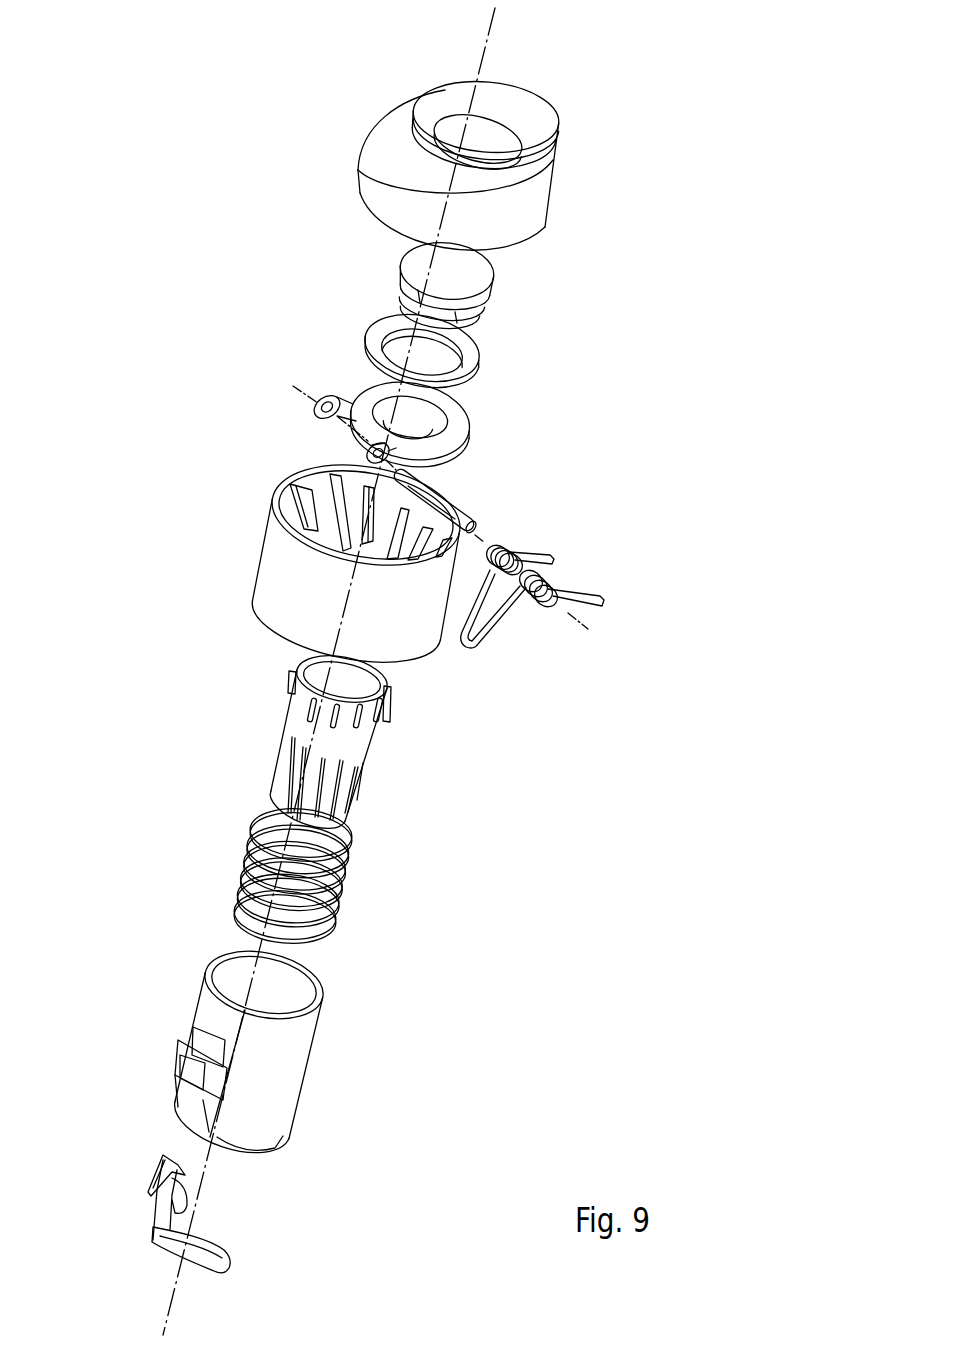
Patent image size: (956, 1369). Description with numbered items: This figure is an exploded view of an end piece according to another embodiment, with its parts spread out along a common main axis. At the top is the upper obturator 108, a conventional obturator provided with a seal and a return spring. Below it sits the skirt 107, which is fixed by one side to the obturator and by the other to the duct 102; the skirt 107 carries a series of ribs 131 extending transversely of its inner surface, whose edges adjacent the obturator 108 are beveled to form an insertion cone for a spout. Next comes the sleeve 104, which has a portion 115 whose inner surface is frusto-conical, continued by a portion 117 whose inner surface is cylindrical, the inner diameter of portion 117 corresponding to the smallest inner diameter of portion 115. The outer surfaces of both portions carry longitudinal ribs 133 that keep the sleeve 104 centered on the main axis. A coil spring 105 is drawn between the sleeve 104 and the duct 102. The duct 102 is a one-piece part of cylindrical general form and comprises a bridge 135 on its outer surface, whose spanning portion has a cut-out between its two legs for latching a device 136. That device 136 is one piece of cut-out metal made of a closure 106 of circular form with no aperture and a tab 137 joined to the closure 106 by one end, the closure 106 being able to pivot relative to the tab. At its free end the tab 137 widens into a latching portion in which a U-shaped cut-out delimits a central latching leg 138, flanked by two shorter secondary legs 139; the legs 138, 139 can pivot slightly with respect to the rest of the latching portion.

The upper obturator 108 is at (278, 407).
The ribs 131 is at (327, 487).
The skirt 107 is at (267, 560).
The longitudinal ribs 133 is at (290, 676).
The sleeve 104 is at (292, 722).
The portion 115 is at (367, 740).
The portion 117 is at (345, 810).
The coil spring 105 is at (237, 880).
The bridge 135 is at (174, 1043).
The duct 102 is at (293, 1066).
The device 136 is at (232, 1227).
The closure 106 is at (217, 1257).
The tab 137 is at (152, 1227).
The leg 138 is at (148, 1183).
The secondary legs 139 is at (188, 1232).